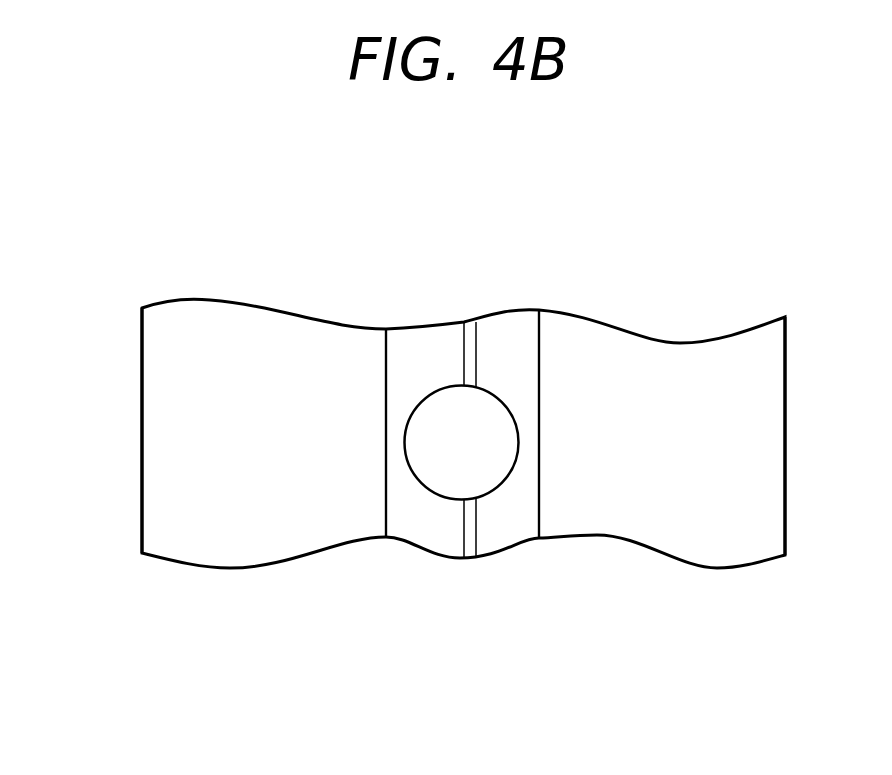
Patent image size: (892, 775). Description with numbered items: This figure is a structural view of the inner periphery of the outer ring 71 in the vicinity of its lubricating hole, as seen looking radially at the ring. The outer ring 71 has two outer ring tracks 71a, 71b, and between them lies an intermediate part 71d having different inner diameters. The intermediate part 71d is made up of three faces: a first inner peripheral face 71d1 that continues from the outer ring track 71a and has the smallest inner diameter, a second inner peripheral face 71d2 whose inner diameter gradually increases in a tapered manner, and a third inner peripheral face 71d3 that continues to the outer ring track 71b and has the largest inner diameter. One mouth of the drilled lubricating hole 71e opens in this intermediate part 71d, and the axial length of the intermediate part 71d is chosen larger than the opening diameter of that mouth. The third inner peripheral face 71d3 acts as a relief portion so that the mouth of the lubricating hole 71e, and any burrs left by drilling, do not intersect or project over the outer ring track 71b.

The outer ring 71 is at (410, 239).
The outer ring track 71a is at (222, 312).
The outer ring track 71b is at (687, 348).
The intermediate part 71d is at (436, 322).
The first inner peripheral face 71d1 is at (430, 532).
The second inner peripheral face 71d2 is at (473, 563).
The third inner peripheral face 71d3 is at (498, 542).
The lubricating hole 71e is at (518, 428).